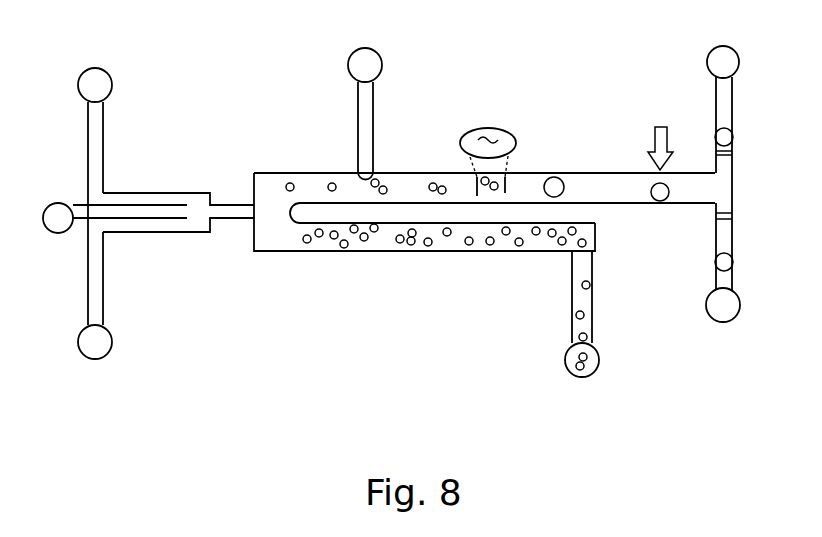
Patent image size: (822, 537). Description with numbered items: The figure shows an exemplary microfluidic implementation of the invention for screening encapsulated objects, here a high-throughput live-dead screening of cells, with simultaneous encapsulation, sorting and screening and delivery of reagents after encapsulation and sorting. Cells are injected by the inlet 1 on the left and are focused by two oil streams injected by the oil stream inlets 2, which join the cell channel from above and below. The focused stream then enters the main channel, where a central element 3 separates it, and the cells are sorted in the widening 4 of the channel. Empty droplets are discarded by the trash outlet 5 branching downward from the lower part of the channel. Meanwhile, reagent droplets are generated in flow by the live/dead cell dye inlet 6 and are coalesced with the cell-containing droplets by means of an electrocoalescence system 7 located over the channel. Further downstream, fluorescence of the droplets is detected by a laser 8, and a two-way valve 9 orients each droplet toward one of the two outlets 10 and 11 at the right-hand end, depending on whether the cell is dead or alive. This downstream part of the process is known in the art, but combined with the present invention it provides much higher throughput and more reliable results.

The inlet 1 is at (142, 209).
The oil stream inlets 2 is at (117, 200).
The separation wall 3 is at (273, 222).
The widening 4 is at (346, 114).
The trash outlet 5 is at (451, 300).
The live/dead cell dye inlet 6 is at (477, 118).
The electrocoalescence system 7 is at (506, 137).
The laser 8 is at (705, 111).
The two-way valve 9 is at (719, 159).
The outlet 10 is at (748, 162).
The outlet 11 is at (748, 262).